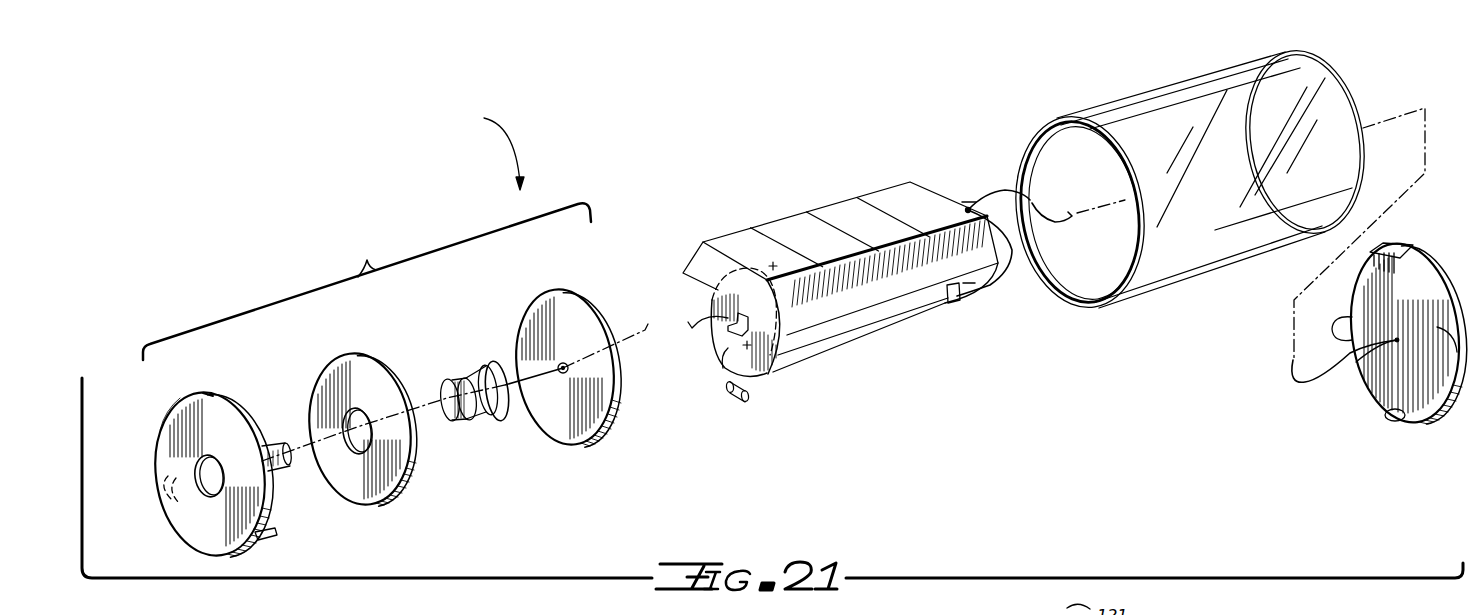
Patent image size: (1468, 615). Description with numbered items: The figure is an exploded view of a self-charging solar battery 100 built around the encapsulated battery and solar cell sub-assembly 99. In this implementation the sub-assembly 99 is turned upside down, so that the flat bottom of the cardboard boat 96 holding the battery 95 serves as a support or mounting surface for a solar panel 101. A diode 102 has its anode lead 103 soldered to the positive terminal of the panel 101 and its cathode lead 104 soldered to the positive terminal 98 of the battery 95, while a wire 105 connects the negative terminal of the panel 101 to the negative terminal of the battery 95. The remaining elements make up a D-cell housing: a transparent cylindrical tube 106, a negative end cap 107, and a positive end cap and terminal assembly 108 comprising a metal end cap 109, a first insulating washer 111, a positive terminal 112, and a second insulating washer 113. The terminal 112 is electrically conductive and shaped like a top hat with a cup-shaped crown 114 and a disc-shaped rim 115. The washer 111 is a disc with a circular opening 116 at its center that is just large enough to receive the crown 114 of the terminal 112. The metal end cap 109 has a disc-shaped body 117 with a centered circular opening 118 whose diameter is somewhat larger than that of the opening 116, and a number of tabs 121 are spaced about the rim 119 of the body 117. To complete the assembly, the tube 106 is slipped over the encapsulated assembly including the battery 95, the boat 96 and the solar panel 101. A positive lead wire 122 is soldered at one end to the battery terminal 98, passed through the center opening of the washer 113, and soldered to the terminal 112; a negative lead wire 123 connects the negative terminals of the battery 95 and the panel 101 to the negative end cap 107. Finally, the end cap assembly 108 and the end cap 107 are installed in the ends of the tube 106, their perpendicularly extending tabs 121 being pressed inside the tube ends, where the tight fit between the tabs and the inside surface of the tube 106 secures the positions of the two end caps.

The battery 95 is at (880, 330).
The boat 96 is at (955, 305).
The positive terminal 98 is at (728, 327).
The sub-assembly 99 is at (847, 371).
The self-charging solar battery 100 is at (483, 146).
The solar panel 101 is at (860, 202).
The diode 102 is at (737, 402).
The anode lead 103 is at (763, 377).
The cathode lead 104 is at (723, 368).
The wire 105 is at (1002, 282).
The transparent cylindrical tube 106 is at (1125, 100).
The negative end cap 107 is at (1388, 380).
The positive end cap and terminal assembly 108 is at (367, 281).
The metal end cap 109 is at (238, 432).
The first insulating washer 111 is at (360, 368).
The positive terminal 112 is at (450, 382).
The second insulating washer 113 is at (582, 302).
The cup-shaped crown 114 is at (470, 421).
The disc-shaped rim 115 is at (490, 362).
The circular opening 116 is at (378, 408).
The disc-shaped body 117 is at (181, 455).
The circular opening 118 is at (212, 490).
The rim 119 is at (167, 420).
The tabs 121 is at (206, 392).
The positive lead wire 122 is at (517, 393).
The negative lead wire 123 is at (998, 190).